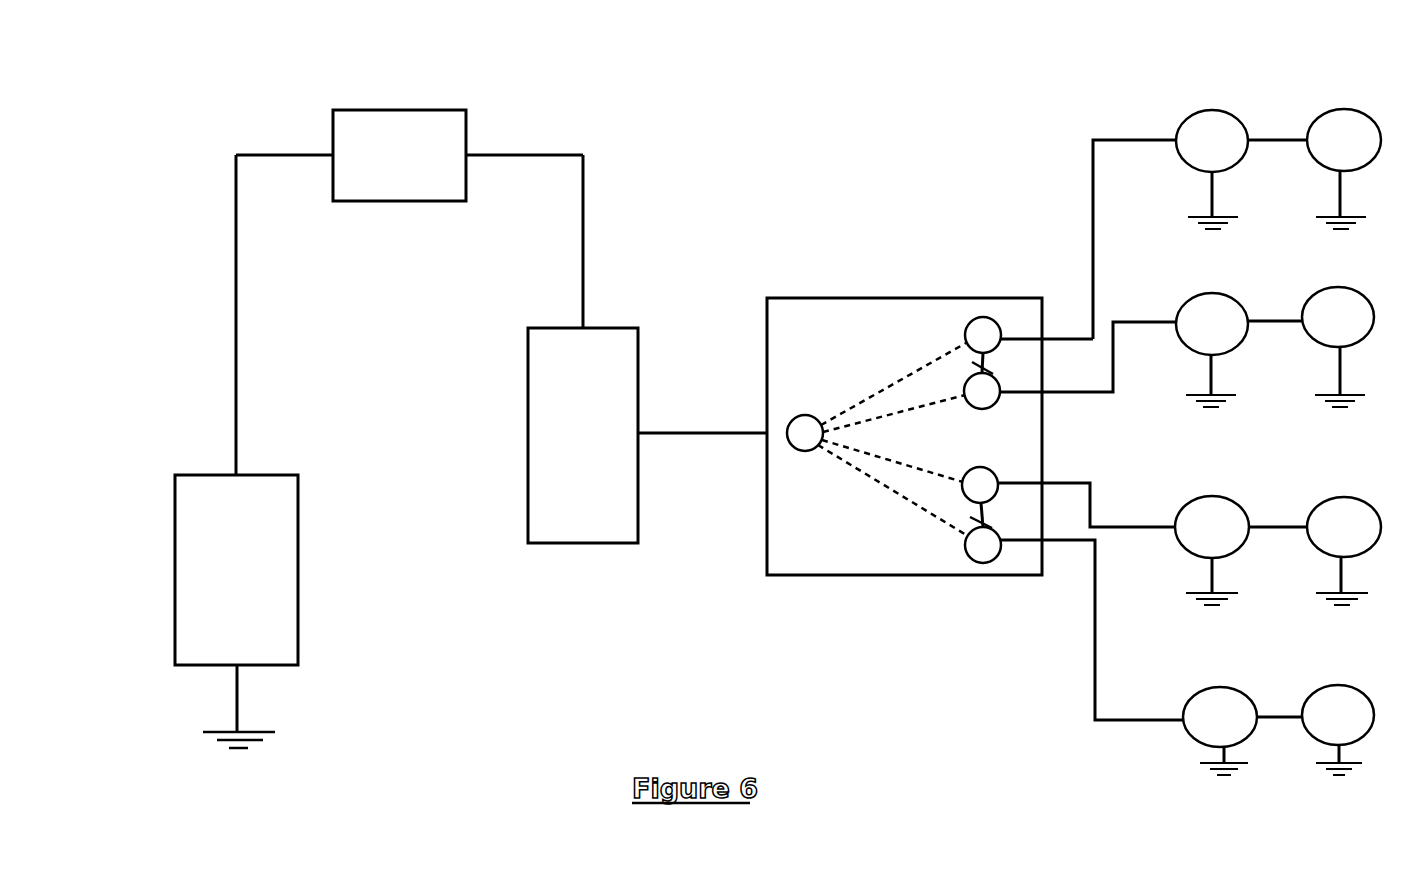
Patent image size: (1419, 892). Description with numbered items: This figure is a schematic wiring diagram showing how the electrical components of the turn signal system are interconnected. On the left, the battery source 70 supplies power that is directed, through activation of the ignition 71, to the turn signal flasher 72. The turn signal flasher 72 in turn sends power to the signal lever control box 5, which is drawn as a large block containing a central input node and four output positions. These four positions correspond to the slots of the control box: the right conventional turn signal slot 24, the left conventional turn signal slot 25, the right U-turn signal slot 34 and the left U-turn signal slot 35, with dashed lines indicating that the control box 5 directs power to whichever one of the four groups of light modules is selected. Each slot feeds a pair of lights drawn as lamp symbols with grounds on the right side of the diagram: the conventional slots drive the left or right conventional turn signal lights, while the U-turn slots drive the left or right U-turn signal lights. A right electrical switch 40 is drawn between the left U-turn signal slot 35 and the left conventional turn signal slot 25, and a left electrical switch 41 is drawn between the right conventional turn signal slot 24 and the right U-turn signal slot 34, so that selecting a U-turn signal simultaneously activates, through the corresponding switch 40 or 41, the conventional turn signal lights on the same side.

The signal lever control box 5 is at (904, 413).
The battery source 70 is at (223, 451).
The ignition 71 is at (409, 195).
The turn signal flasher 72 is at (647, 458).
The left U-turn signal slot 35 is at (1012, 335).
The left conventional turn signal slot 25 is at (1070, 378).
The right conventional turn signal slot 24 is at (1068, 490).
The right U-turn signal slot 34 is at (1057, 623).
The right electrical switch 40 is at (1004, 360).
The left electrical switch 41 is at (1003, 521).